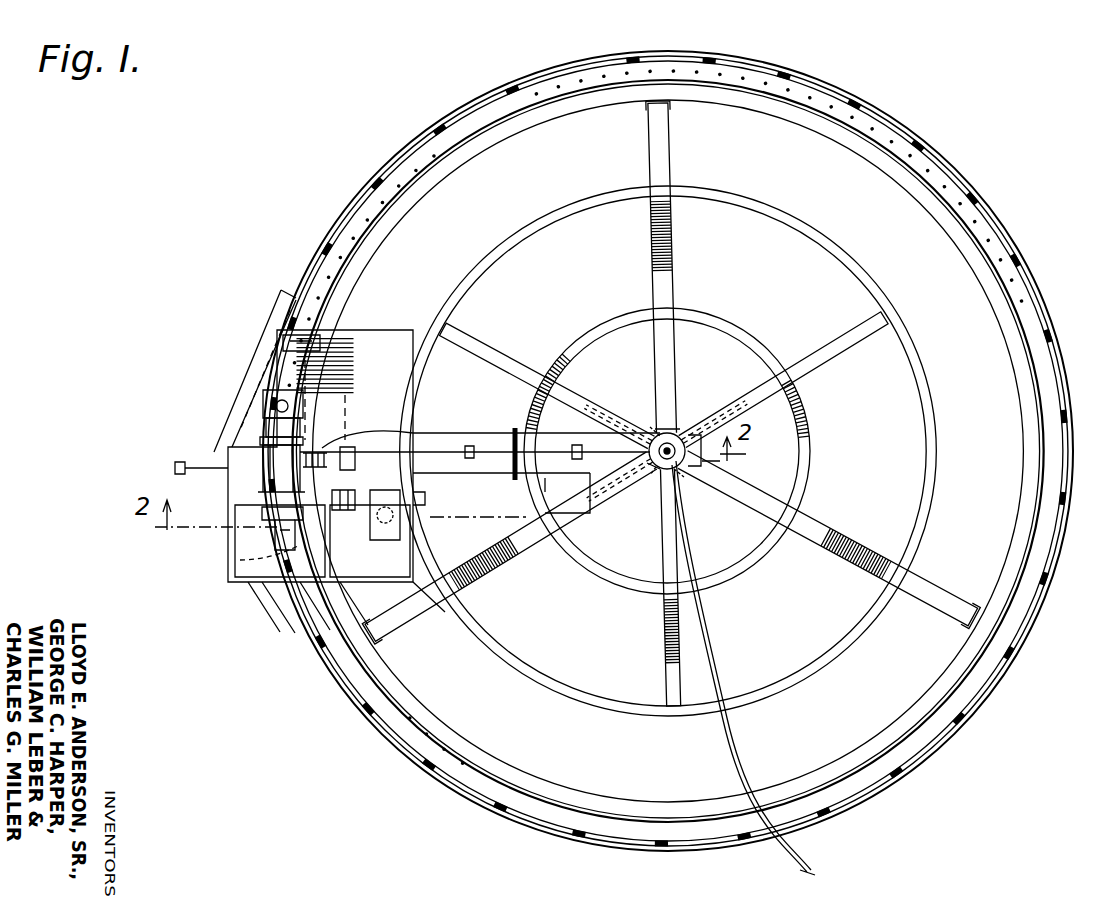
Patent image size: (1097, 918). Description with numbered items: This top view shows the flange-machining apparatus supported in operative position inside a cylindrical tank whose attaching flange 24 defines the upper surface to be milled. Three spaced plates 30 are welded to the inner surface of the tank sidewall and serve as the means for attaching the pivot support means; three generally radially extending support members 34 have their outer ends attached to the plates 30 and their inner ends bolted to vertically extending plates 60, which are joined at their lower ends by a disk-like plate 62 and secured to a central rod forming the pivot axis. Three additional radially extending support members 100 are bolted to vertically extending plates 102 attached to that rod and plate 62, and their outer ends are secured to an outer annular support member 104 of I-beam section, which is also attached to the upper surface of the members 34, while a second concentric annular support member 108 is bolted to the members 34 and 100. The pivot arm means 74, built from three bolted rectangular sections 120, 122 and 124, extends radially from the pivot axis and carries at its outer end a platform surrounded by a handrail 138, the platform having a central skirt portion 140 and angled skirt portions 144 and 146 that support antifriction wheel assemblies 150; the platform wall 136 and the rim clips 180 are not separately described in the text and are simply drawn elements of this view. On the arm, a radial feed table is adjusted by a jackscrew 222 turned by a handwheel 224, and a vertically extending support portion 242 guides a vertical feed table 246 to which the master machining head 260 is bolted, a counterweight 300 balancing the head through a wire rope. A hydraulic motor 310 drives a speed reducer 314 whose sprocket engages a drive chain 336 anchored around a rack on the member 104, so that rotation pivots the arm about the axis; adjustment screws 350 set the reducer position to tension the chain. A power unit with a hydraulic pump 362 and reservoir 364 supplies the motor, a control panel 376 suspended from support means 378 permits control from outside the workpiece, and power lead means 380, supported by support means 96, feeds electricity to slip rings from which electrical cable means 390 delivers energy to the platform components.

The attaching flange 24 is at (421, 745).
The spaced plates 30 is at (665, 92).
The radially extending support members 34 is at (694, 266).
The vertically extending plates 60 is at (652, 420).
The disk-like plate 62 is at (690, 425).
The pivot arm means 74 is at (484, 500).
The support means 96 is at (720, 462).
The additional radially extending support members 100 is at (522, 336).
The vertically extending plates 102 is at (728, 432).
The outer annular support member 104 is at (667, 451).
The second annular support member 108 is at (770, 572).
The pivot arm section 120 is at (560, 480).
The pivot arm section 122 is at (455, 440).
The pivot arm section 124 is at (380, 440).
The housing wall 136 is at (412, 383).
The handrail 138 is at (393, 292).
The central skirt portion 140 is at (230, 500).
The depending skirt portion 144 is at (258, 608).
The depending skirt portion 146 is at (278, 300).
The antifriction wheel assemblies 150 is at (293, 282).
The rim clip 180 is at (368, 188).
The jackscrew 222 is at (262, 456).
The handwheel 224 is at (352, 444).
The vertically extending support portion 242 is at (258, 440).
The vertical feed table 246 is at (265, 425).
The master machining head 260 is at (250, 402).
The counterweight 300 is at (291, 540).
The hydraulic motor 310 is at (342, 510).
The speed reducer 314 is at (370, 533).
The drive chain 336 is at (412, 588).
The adjustment screws 350 is at (416, 500).
The hydraulic pump 362 is at (275, 538).
The reservoir 364 is at (280, 560).
The control panel 376 is at (162, 471).
The support means 378 is at (212, 476).
The power lead means 380 is at (712, 660).
The electrical cable means 390 is at (515, 432).